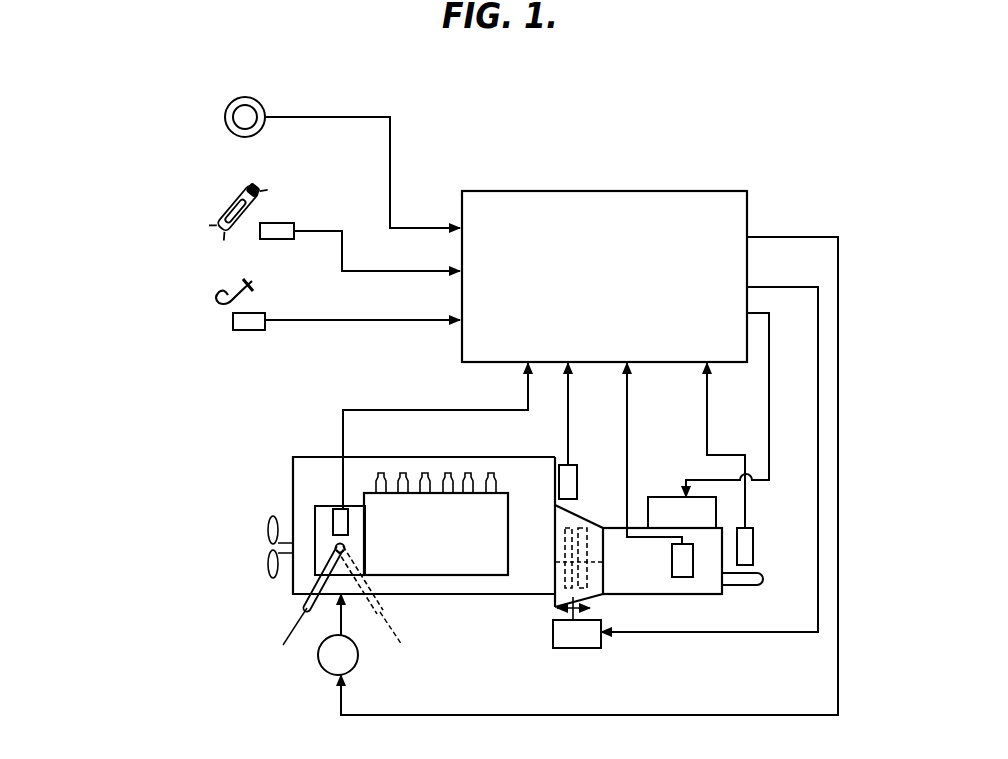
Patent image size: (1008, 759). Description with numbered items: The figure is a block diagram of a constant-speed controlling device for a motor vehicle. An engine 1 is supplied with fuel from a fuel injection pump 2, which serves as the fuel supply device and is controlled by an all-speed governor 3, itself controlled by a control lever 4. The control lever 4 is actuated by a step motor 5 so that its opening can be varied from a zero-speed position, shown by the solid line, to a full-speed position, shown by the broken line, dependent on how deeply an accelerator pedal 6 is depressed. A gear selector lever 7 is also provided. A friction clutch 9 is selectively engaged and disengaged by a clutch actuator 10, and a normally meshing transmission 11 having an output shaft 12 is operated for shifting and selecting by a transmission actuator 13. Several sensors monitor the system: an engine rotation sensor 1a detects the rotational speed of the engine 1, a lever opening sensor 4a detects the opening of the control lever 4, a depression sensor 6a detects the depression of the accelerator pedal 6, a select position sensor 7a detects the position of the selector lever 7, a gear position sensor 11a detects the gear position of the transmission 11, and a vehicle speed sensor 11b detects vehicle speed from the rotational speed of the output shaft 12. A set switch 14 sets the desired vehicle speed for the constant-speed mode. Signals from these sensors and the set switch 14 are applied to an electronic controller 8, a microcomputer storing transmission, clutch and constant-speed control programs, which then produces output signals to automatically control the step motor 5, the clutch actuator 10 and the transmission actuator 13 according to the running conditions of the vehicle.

The engine 1 is at (510, 594).
The engine rotation sensor 1a is at (574, 471).
The fuel injection pump 2 is at (441, 551).
The governor 3 is at (316, 516).
The control lever 4 is at (303, 606).
The lever opening sensor 4a is at (348, 520).
The step motor 5 is at (327, 674).
The accelerator pedal 6 is at (256, 285).
The depression sensor 6a is at (249, 333).
The gear selector lever 7 is at (253, 183).
The select position sensor 7a is at (283, 222).
The electronic controller 8 is at (716, 201).
The friction clutch 9 is at (583, 532).
The clutch actuator 10 is at (580, 646).
The normally meshing transmission 11 is at (700, 590).
The gear position sensor 11a is at (672, 558).
The vehicle speed sensor 11b is at (753, 549).
The output shaft 12 is at (750, 581).
The transmission actuator 13 is at (660, 497).
The set switch 14 is at (256, 101).